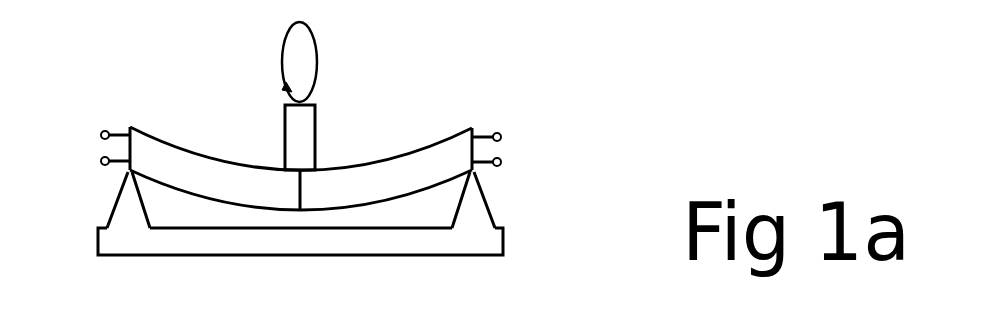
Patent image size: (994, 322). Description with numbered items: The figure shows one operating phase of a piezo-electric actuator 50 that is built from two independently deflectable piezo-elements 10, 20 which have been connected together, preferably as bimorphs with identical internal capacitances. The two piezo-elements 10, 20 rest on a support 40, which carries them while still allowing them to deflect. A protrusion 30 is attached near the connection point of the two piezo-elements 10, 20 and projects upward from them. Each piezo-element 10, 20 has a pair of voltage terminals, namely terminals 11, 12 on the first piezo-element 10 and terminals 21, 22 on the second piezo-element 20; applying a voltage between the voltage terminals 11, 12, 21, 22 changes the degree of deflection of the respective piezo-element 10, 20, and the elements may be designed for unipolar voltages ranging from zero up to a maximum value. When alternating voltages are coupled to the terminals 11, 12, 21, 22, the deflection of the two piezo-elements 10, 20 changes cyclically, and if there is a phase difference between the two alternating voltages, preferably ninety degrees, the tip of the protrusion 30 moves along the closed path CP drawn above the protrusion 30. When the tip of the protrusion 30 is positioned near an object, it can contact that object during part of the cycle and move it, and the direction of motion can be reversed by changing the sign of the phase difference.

The piezo-electric actuator 50 is at (188, 67).
The piezo-element 10 is at (170, 143).
The piezo-element 20 is at (443, 142).
The protrusion 30 is at (285, 123).
The closed path CP is at (317, 58).
The voltage terminal 11 is at (101, 164).
The voltage terminal 12 is at (101, 134).
The voltage terminal 21 is at (501, 166).
The voltage terminal 22 is at (501, 134).
The support 40 is at (412, 257).